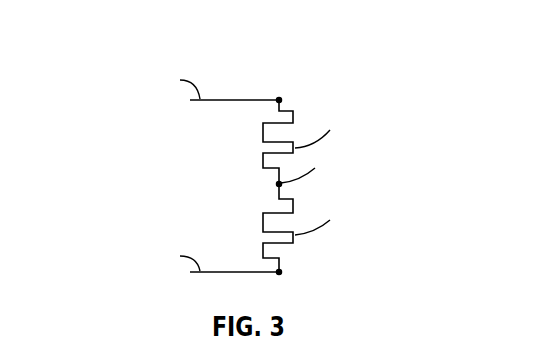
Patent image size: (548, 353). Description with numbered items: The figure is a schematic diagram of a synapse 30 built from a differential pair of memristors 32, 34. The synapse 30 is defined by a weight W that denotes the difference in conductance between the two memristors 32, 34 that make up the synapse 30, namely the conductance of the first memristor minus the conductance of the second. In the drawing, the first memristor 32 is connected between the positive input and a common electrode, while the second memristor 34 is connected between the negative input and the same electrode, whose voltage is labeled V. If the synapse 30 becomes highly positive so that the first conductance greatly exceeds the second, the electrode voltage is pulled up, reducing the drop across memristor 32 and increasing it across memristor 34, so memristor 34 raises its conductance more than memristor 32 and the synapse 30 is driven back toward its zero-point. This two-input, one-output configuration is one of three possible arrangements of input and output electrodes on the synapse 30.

The synapse 30 is at (131, 42).
The memristor 32 is at (248, 151).
The memristor 34 is at (248, 226).